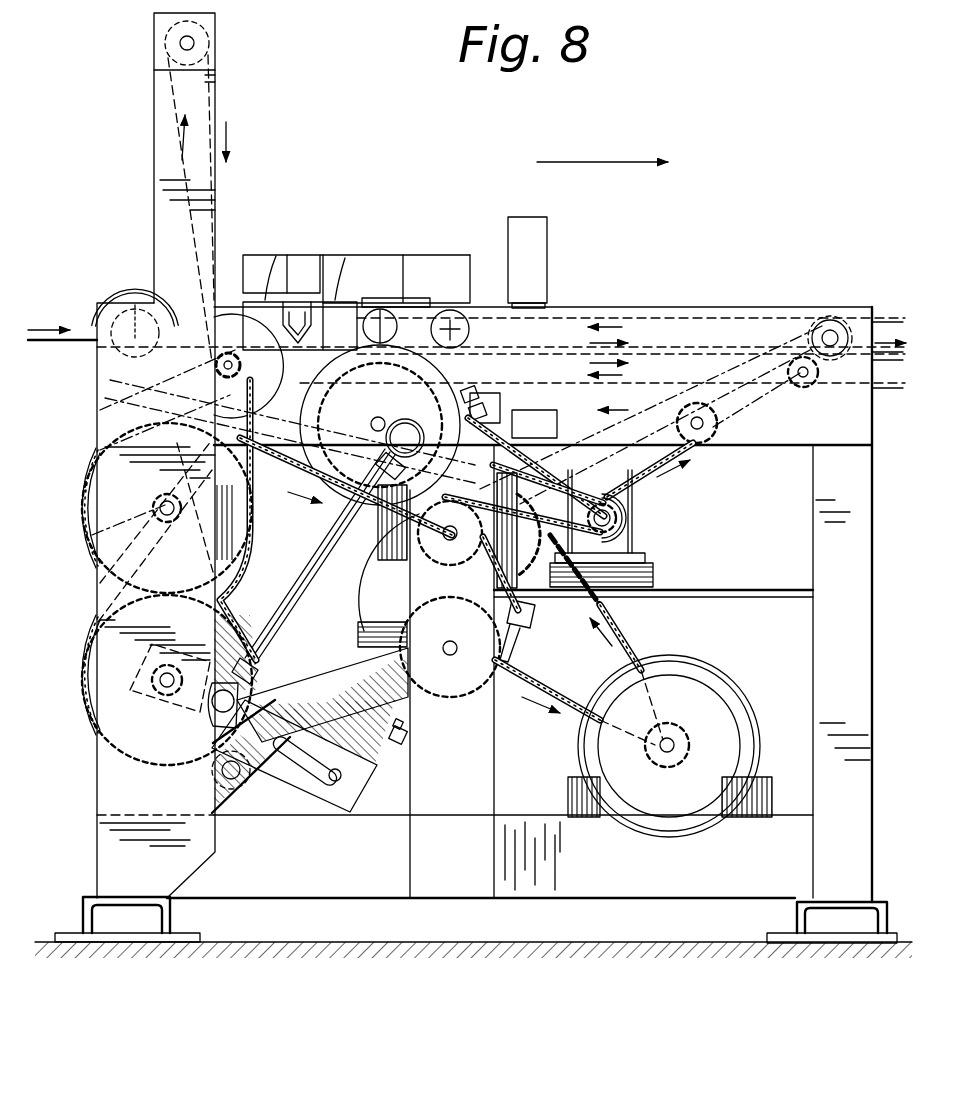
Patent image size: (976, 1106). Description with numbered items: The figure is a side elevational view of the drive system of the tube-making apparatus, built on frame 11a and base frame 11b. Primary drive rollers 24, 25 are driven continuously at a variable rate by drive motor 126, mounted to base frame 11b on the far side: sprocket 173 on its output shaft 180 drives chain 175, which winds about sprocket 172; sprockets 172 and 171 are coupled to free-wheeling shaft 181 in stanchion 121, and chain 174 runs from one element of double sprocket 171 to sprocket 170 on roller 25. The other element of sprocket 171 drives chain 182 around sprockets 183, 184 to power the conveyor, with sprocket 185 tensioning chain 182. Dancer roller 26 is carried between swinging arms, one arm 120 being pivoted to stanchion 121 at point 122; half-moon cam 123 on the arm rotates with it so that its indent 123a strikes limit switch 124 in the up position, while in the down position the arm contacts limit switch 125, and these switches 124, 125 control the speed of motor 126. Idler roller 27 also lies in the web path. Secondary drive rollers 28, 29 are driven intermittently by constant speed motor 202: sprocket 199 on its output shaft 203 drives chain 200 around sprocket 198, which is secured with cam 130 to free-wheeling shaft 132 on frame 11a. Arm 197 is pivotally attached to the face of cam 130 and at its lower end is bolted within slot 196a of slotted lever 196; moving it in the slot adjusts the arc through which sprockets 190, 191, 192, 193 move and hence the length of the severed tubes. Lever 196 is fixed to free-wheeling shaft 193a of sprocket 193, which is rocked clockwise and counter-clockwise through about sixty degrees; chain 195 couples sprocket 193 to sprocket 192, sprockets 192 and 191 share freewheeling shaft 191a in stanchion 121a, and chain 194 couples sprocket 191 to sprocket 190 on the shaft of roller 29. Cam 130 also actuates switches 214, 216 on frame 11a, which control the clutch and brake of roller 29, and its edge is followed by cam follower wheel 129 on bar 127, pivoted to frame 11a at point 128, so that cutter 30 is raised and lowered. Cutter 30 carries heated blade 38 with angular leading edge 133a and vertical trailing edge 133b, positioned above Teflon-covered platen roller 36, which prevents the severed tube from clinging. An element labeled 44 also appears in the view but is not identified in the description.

The frame 11a is at (628, 330).
The base frame 11b is at (782, 833).
The primary drive roller 24 is at (110, 385).
The primary drive roller 25 is at (75, 297).
The dancer roller 26 is at (235, 795).
The idler roller 27 is at (205, 36).
The secondary drive roller 28 is at (232, 300).
The secondary drive roller 29 is at (228, 378).
The cutter 30 is at (312, 300).
The platen roller 36 is at (310, 320).
The heated blade 38 is at (302, 274).
The floor 44 is at (222, 982).
The arm 120 is at (338, 696).
The stanchion 121 is at (482, 766).
The stanchion 121a is at (97, 798).
The point 122 is at (450, 656).
The half-moon cam 123 is at (372, 622).
The indent 123a is at (463, 575).
The limit switch 124 is at (520, 630).
The limit switch 125 is at (402, 745).
The drive motor 126 is at (722, 688).
The bar 127 is at (366, 278).
The point 128 is at (450, 329).
The cam follower wheel 129 is at (382, 326).
The cam 130 is at (422, 377).
The free-wheeling shaft 132 is at (380, 419).
The leading edge 133a is at (278, 256).
The trailing edge 133b is at (347, 262).
The sprocket 170 is at (130, 292).
The double sprocket 171 is at (376, 583).
The sprocket 172 is at (520, 462).
The sprocket 173 is at (676, 752).
The chain 174 is at (270, 470).
The chain 175 is at (620, 630).
The output shaft 180 is at (667, 753).
The free-wheeling shaft 181 is at (376, 560).
The chain 182 is at (688, 452).
The sprocket 183 is at (805, 388).
The sprocket 184 is at (828, 318).
The sprocket 185 is at (708, 432).
The sprocket 190 is at (253, 408).
The sprocket 191 is at (80, 512).
The freewheeling shaft 191a is at (160, 505).
The sprocket 192 is at (82, 546).
The sprocket 193 is at (82, 688).
The free-wheeling shaft 193a is at (162, 690).
The chain 194 is at (82, 480).
The chain 195 is at (82, 650).
The slotted lever 196 is at (350, 802).
The slot 196a is at (333, 782).
The arm 197 is at (300, 580).
The sprocket 198 is at (345, 515).
The sprocket 199 is at (616, 524).
The chain 200 is at (560, 470).
The constant speed motor 202 is at (617, 540).
The output shaft 203 is at (608, 512).
The switch 214 is at (500, 405).
The switch 216 is at (505, 388).